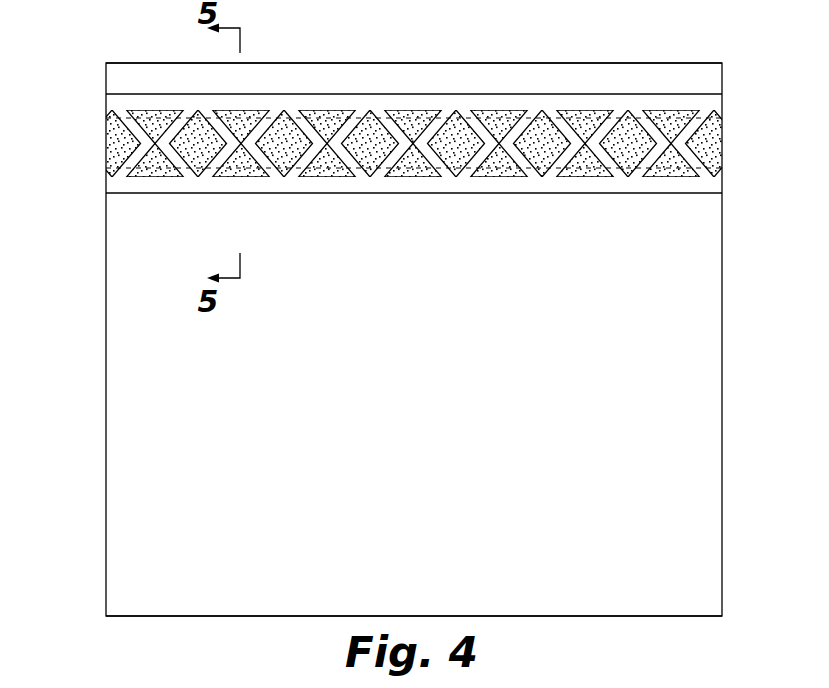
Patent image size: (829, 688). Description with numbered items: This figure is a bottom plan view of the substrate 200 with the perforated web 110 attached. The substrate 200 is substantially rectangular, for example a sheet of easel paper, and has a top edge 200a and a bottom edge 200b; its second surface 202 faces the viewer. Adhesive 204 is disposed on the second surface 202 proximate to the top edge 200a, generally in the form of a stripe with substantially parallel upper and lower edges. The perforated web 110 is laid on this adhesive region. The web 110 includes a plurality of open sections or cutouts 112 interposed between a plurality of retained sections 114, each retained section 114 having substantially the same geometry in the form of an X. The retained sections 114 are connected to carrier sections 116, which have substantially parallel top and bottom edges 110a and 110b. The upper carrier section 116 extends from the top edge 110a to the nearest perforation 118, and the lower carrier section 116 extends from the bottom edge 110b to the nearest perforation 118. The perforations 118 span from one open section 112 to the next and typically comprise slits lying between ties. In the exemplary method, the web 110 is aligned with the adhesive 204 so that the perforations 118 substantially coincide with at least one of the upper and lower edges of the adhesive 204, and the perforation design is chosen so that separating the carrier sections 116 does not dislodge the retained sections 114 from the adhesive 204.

The substrate 200 is at (620, 61).
The top edge 200a is at (480, 63).
The bottom edge 200b is at (582, 617).
The second surface 202 is at (430, 367).
The perforated web 110 is at (410, 132).
The top edge 110a is at (136, 93).
The bottom edge 110b is at (145, 194).
The carrier sections 116 is at (415, 132).
The open sections 112 is at (417, 115).
The retained sections 114 is at (658, 161).
The perforations 118 is at (356, 110).
The adhesive 204 is at (707, 138).